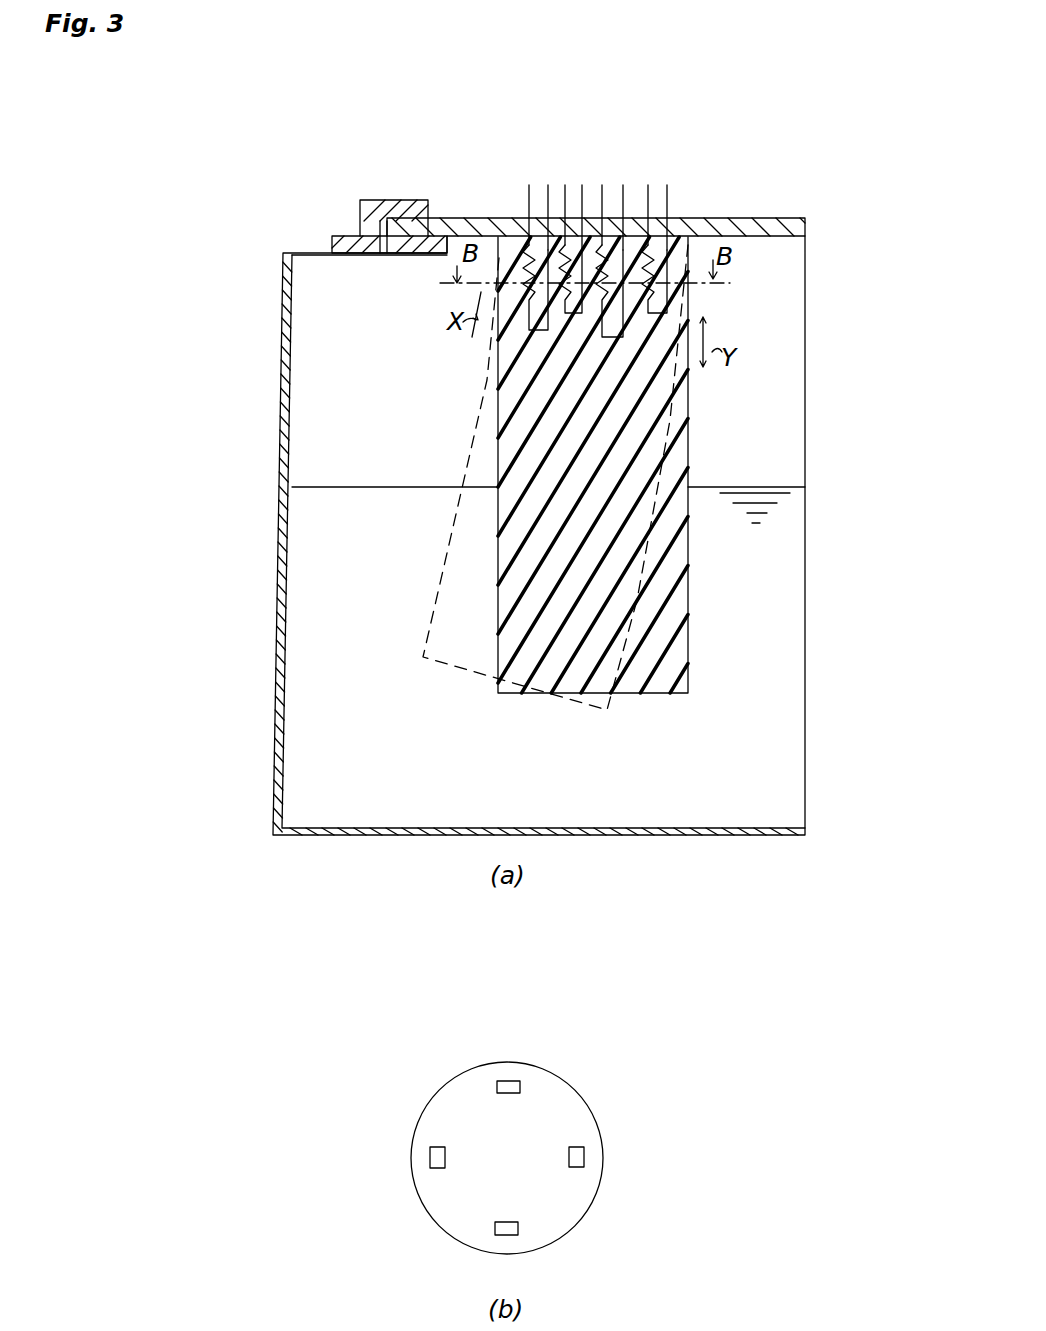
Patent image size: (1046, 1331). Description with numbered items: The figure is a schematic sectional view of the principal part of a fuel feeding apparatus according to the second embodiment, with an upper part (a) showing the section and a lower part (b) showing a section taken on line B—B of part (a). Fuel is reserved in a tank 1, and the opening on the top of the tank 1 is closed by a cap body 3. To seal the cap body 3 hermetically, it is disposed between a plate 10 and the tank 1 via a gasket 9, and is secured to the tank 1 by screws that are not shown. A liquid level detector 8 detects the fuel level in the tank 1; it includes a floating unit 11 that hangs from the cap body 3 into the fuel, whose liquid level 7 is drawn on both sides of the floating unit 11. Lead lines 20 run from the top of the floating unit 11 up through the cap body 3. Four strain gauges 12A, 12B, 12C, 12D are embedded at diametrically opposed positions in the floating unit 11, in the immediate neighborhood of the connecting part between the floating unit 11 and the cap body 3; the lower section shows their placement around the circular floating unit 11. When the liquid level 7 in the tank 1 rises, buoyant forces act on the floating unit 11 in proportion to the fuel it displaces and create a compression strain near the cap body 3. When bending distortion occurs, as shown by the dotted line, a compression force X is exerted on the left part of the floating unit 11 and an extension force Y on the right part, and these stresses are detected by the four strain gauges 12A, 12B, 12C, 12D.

The tank 1 is at (283, 538).
The cap body 3 is at (763, 218).
The liquid level 7 is at (765, 487).
The liquid level detector 8 is at (498, 432).
The gasket 9 is at (432, 237).
The plate 10 is at (382, 200).
The floating unit 11 is at (688, 566).
The strain gauge 12A is at (526, 288).
The strain gauge 12B is at (580, 305).
The strain gauge 12C is at (656, 272).
The strain gauge 12D is at (620, 298).
The lead wires 20 is at (698, 186).